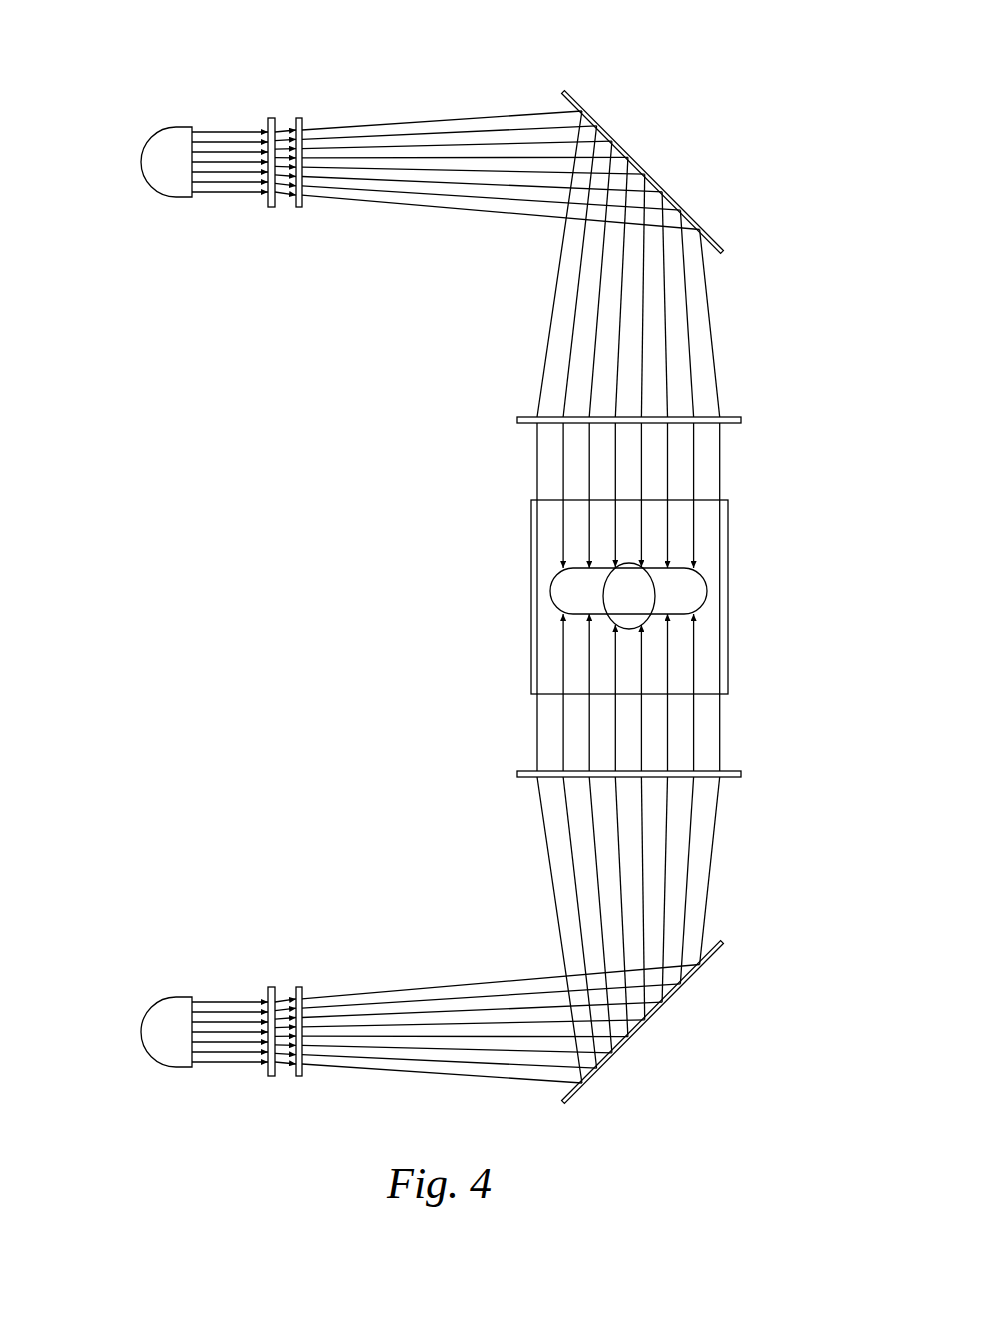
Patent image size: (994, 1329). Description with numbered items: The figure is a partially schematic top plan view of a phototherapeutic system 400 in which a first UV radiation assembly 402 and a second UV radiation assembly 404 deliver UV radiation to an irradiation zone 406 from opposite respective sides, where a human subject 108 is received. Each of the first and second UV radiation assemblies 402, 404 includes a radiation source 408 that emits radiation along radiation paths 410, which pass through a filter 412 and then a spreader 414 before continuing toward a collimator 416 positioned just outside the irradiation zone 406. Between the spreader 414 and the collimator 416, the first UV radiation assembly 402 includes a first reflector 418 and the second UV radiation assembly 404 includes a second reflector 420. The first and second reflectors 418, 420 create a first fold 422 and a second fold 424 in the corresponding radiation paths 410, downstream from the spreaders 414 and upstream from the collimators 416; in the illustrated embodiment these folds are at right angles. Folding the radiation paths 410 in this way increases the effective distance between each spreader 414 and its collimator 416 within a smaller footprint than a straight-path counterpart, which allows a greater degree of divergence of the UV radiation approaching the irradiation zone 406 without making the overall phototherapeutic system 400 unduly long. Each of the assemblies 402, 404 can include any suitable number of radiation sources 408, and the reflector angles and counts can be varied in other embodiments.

The phototherapeutic system 400 is at (770, 78).
The first UV radiation assembly 402 is at (113, 82).
The second UV radiation assembly 404 is at (113, 729).
The irradiation zone 406 is at (728, 570).
The radiation source 408 is at (173, 126).
The radiation paths 410 is at (408, 120).
The filter 412 is at (270, 118).
The spreader 414 is at (285, 220).
The collimator 416 is at (517, 418).
The first reflector 418 is at (652, 177).
The second reflector 420 is at (635, 1035).
The first fold 422 is at (532, 248).
The second fold 424 is at (530, 962).
The human subject 108 is at (552, 593).